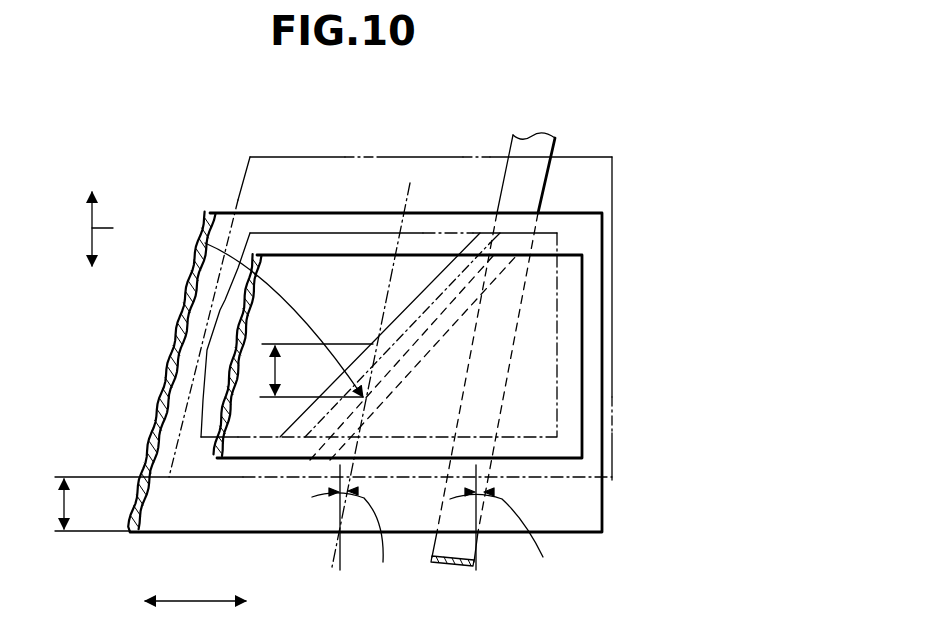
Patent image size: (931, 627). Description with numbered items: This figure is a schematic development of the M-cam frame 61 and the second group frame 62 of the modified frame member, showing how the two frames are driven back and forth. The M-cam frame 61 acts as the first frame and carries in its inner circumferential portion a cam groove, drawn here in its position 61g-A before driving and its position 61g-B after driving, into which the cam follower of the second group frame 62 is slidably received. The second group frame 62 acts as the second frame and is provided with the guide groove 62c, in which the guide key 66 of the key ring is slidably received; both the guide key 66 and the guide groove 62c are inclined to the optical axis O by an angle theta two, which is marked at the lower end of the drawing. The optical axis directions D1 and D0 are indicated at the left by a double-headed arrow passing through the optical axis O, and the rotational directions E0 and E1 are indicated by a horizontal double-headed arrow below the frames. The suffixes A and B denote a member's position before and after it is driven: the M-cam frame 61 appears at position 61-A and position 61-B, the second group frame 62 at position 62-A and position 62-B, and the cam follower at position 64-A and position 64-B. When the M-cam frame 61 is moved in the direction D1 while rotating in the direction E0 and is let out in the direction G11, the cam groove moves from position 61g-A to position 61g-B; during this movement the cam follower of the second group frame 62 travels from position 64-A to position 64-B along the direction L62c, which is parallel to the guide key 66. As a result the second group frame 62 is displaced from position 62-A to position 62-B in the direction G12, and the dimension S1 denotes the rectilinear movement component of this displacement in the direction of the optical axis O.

The second group frame position after driving 62-B is at (612, 157).
The second group frame position before driving 62-A is at (603, 211).
The M-cam frame position after driving 61-B is at (603, 222).
The M-cam frame position before driving 61-A is at (557, 240).
The second group frame 62 is at (602, 270).
The M-cam frame 61 is at (582, 385).
The cam follower position before driving 64-A is at (205, 243).
The cam follower position after driving 64-B is at (373, 343).
The cam groove position before driving 61g-A is at (428, 343).
The cam groove position after driving 61g-B is at (433, 290).
The guide groove 62c is at (550, 177).
The guide key 66 is at (453, 544).
The direction of cam follower movement L62c is at (405, 198).
The let-out direction of the M-cam frame G11 is at (566, 453).
The movement direction of the second group frame G12 is at (612, 483).
The rectilinear movement component S1 is at (218, 436).
The direction D1 is at (68, 223).
The direction D0 is at (59, 262).
The optical axis O is at (114, 228).
The rotational direction E0 is at (188, 582).
The rotational direction E1 is at (243, 582).